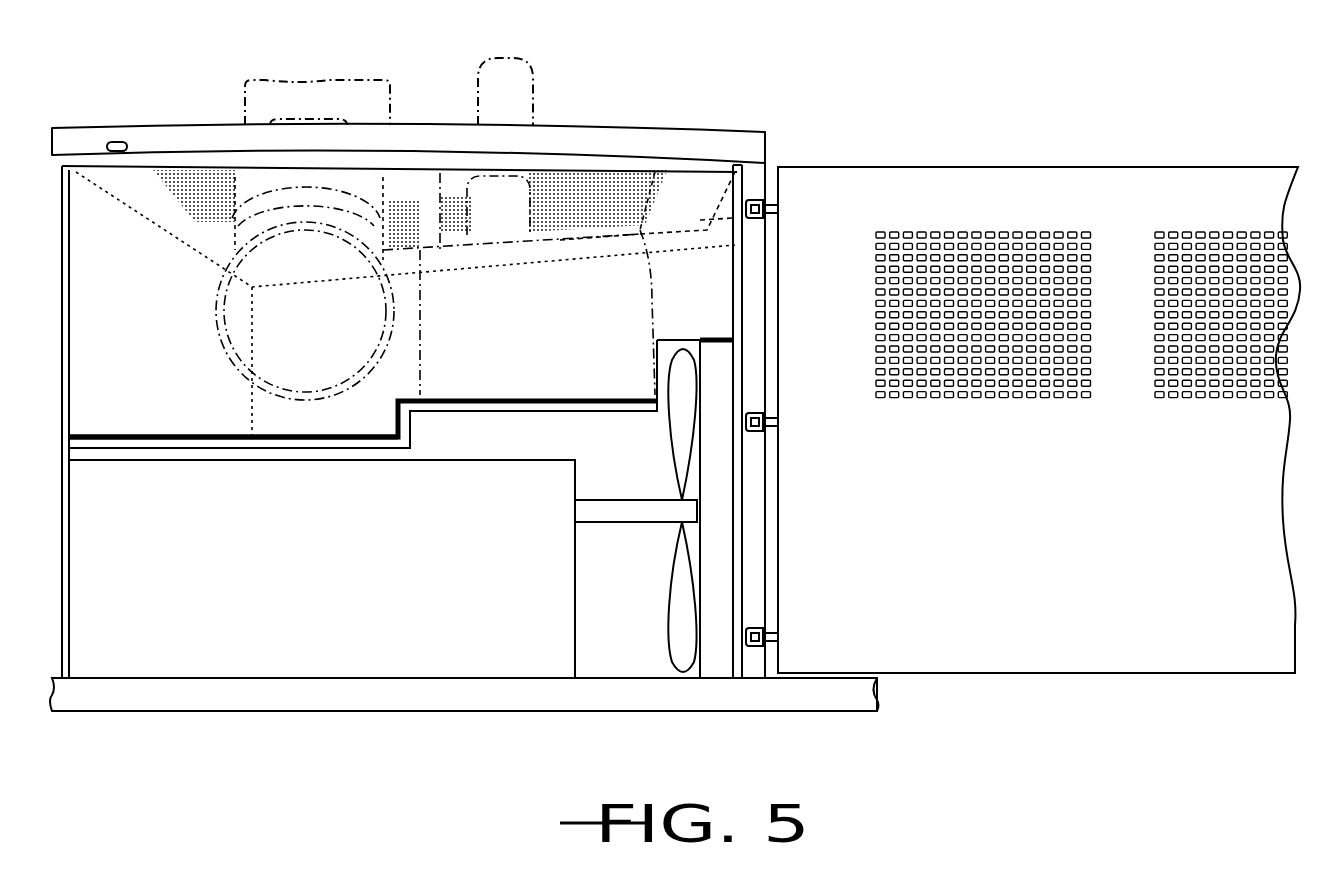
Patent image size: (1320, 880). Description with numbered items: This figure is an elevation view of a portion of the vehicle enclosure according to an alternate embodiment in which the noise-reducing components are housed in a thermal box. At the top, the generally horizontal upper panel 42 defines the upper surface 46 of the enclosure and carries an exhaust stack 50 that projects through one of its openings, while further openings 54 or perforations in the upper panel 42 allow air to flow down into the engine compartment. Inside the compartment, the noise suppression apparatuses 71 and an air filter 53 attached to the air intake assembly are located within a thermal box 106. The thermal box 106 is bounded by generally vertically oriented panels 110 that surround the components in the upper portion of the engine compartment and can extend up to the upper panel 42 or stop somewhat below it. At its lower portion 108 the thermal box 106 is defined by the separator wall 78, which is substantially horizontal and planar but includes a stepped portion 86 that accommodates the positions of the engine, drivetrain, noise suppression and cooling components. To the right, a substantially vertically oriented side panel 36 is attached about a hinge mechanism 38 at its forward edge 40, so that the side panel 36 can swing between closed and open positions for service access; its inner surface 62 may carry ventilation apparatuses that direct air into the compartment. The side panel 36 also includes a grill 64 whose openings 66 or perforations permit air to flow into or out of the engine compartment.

The side panel 36 is at (818, 178).
The hinge mechanism 38 is at (775, 215).
The forward edge 40 is at (773, 660).
The upper panel 42 is at (642, 222).
The upper surface 46 is at (625, 128).
The exhaust stack 50 is at (503, 93).
The air filter 53 is at (323, 333).
The openings 54 is at (596, 183).
The inner surface 62 is at (848, 577).
The grill 64 is at (1081, 363).
The openings 66 is at (1030, 297).
The noise suppression apparatuses 71 is at (457, 325).
The separator wall 78 is at (612, 411).
The stepped portion 86 is at (398, 396).
The thermal box 106 is at (135, 195).
The lower portion 108 is at (468, 404).
The panels 110 is at (322, 423).